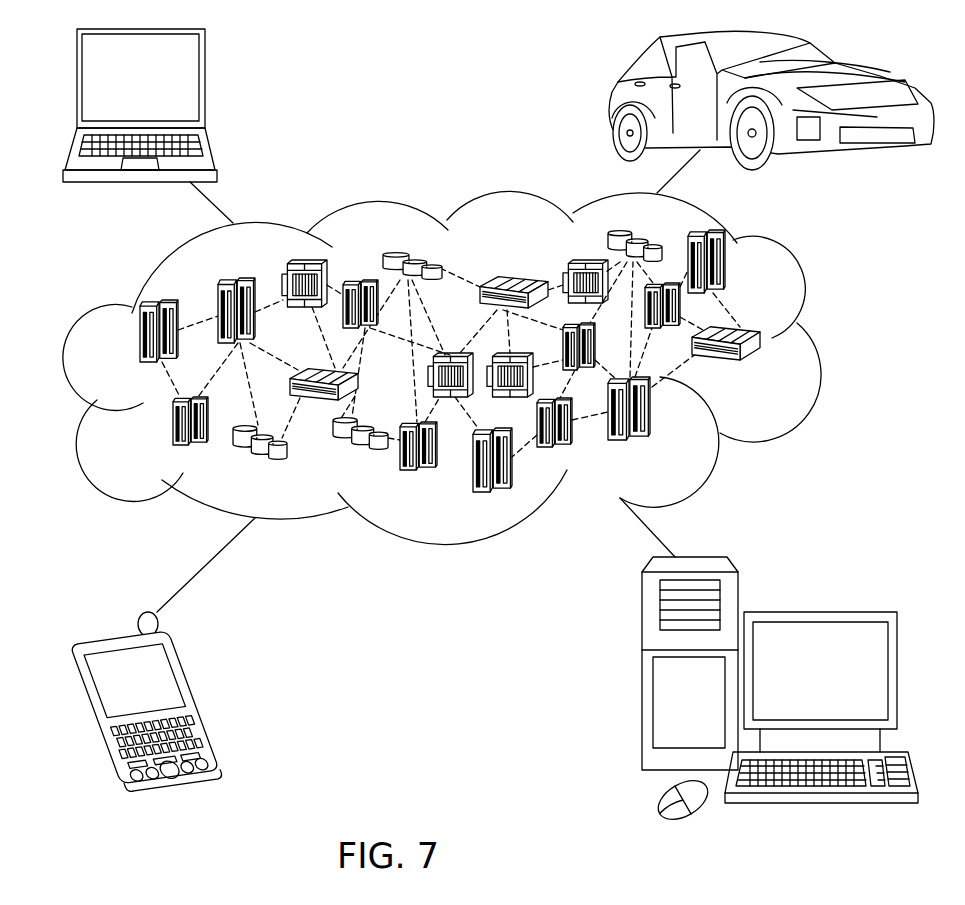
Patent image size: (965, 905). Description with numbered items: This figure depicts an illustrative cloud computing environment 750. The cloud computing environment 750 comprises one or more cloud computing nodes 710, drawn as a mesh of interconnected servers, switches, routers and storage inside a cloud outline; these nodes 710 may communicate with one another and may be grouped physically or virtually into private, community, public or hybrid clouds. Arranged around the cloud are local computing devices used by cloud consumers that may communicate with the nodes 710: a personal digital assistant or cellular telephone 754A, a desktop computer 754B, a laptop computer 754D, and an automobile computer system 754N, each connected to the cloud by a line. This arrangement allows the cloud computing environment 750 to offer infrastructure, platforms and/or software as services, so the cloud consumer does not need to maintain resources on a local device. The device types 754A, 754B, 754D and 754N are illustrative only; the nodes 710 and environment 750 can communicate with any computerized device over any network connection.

The cloud computing nodes 710 is at (780, 378).
The cloud computing environment 750 is at (822, 339).
The personal digital assistant (PDA) or cellular telephone 754A is at (195, 697).
The desktop computer 754B is at (818, 610).
The laptop computer 754D is at (205, 86).
The automobile computer system 754N is at (612, 100).